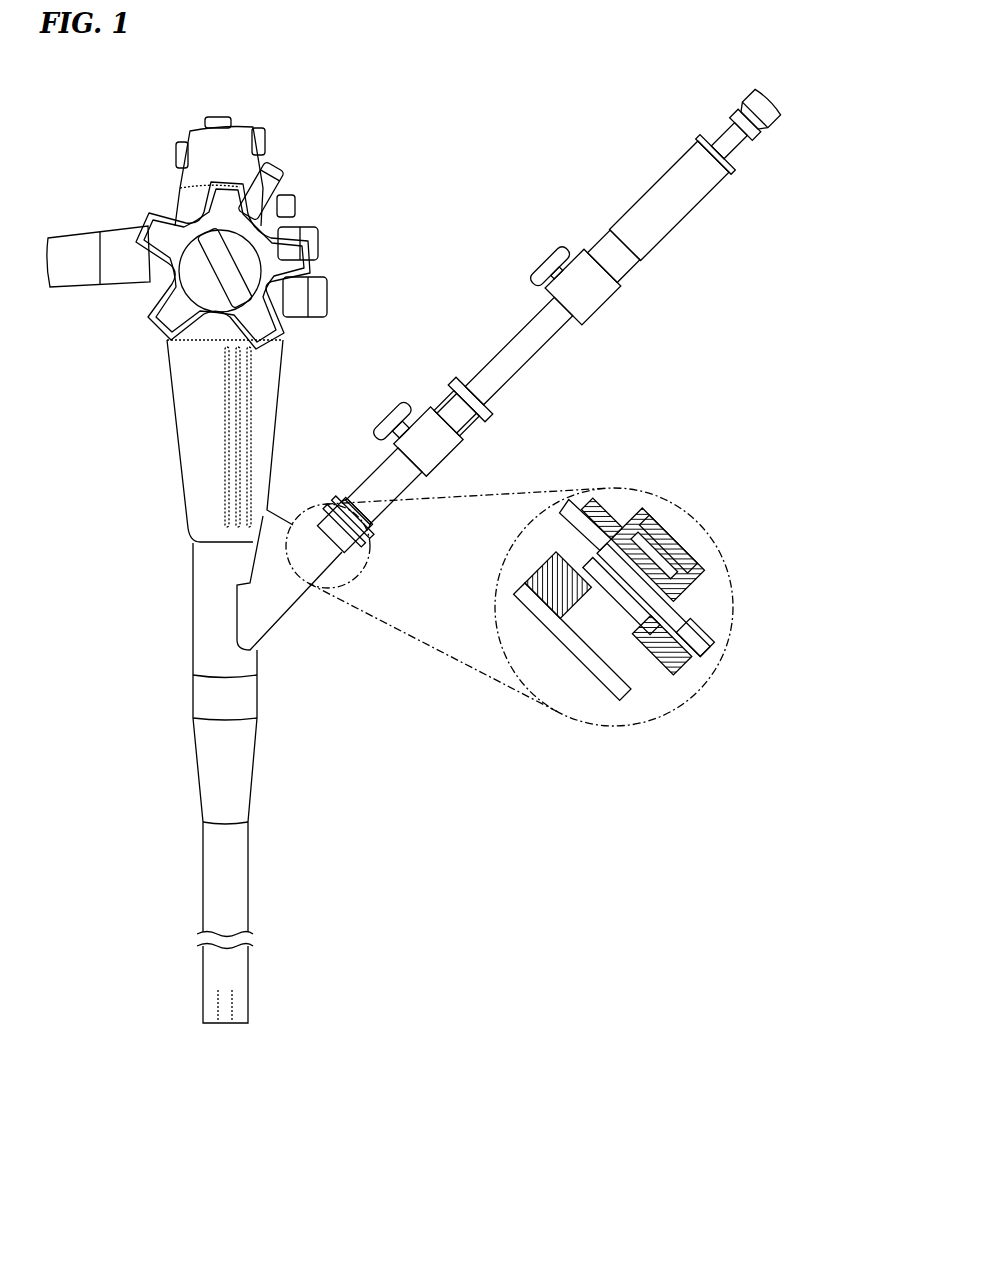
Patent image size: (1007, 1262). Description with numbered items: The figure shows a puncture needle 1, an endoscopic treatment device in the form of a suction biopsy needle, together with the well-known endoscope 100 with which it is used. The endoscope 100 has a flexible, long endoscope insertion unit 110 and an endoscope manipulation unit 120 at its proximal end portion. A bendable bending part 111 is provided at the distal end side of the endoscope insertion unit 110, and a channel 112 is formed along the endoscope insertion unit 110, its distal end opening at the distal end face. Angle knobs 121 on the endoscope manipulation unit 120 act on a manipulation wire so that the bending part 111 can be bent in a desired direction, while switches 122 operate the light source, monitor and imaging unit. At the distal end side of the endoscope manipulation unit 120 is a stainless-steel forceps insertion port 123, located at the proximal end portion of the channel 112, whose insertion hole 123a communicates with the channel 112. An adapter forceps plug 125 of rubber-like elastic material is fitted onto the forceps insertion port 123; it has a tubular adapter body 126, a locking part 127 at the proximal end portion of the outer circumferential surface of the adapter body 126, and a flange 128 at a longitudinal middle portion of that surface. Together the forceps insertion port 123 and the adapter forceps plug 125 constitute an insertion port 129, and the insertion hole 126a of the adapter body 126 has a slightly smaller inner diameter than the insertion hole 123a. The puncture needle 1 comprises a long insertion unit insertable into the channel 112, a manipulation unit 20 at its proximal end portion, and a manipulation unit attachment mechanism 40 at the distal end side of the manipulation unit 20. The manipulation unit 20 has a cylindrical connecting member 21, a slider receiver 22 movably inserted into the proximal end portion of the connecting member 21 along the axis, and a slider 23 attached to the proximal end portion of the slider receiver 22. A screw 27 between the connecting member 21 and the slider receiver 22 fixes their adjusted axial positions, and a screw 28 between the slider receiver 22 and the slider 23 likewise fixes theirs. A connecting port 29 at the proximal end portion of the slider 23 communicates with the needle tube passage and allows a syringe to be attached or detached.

The puncture needle 1 is at (525, 279).
The manipulation unit 20 is at (525, 279).
The connecting member 21 is at (383, 470).
The slider receiver 22 is at (515, 343).
The slider 23 is at (665, 190).
The screw 27 is at (398, 415).
The screw 28 is at (555, 265).
The connecting port 29 is at (750, 122).
The manipulation unit attachment mechanism 40 is at (320, 500).
The endoscope 100 is at (220, 619).
The endoscope insertion unit 110 is at (200, 905).
The bending part 111 is at (238, 970).
The channel 112 is at (218, 1022).
The endoscope manipulation unit 120 is at (178, 412).
The angle knobs 121 is at (203, 318).
The switches 122 is at (320, 292).
The forceps insertion port 123 is at (623, 700).
The insertion hole 123a is at (580, 647).
The adapter forceps plug 125 is at (695, 623).
The adapter body 126 is at (608, 543).
The insertion hole 126a is at (667, 563).
The locking part 127 is at (613, 523).
The flange 128 is at (560, 533).
The insertion port 129 is at (576, 630).